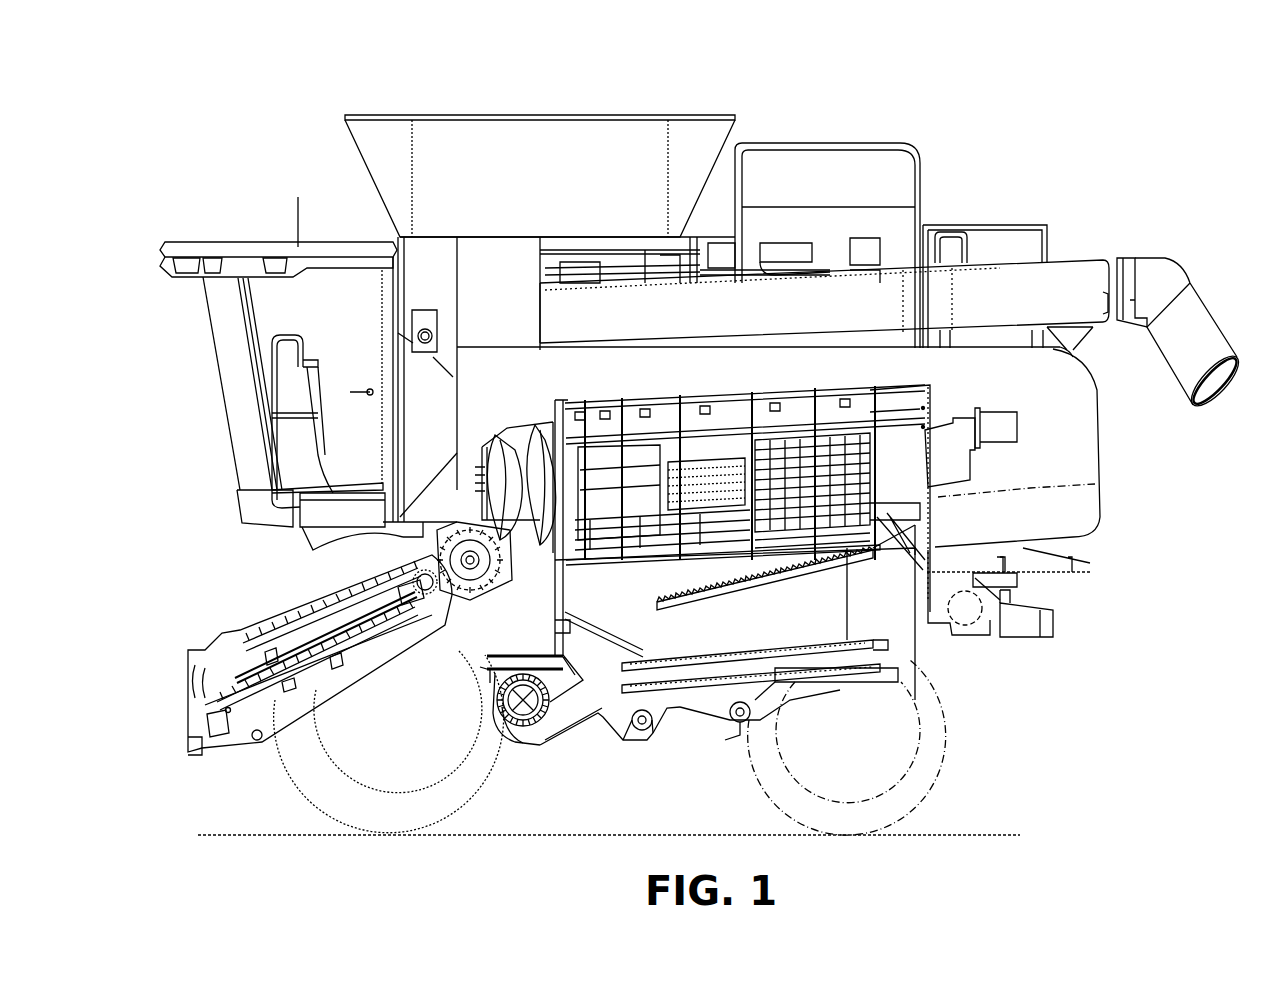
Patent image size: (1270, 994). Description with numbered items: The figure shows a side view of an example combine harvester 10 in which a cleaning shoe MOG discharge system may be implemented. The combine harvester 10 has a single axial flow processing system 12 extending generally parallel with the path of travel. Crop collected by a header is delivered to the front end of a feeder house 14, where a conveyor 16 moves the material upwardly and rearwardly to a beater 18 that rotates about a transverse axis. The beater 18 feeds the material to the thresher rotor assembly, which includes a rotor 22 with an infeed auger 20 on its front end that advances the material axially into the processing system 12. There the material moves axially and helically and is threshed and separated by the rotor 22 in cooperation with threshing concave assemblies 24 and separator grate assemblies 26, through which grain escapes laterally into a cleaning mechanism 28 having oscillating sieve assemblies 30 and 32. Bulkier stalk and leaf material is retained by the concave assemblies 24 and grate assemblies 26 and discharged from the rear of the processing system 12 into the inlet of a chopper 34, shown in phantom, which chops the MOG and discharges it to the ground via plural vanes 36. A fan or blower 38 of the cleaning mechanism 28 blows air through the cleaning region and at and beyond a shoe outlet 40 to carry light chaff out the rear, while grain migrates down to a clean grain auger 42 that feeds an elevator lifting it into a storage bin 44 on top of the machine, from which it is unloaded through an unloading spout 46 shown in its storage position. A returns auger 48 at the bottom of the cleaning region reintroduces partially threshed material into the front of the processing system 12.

The combine harvester 10 is at (838, 80).
The axial flow processing system 12 is at (642, 380).
The feeder house 14 is at (208, 630).
The conveyor 16 is at (345, 655).
The beater 18 is at (462, 585).
The infeed auger 20 is at (513, 452).
The rotor 22 is at (538, 418).
The threshing concave assemblies 24 is at (598, 478).
The separator grate assemblies 26 is at (771, 440).
The cleaning mechanism 28 is at (650, 620).
The oscillating sieve assembly 30 is at (720, 655).
The oscillating sieve assembly 32 is at (780, 665).
The chopper 34 is at (966, 620).
The vanes 36 is at (1045, 632).
The fan or blower 38 is at (522, 720).
The shoe outlet 40 is at (880, 610).
The clean grain auger 42 is at (641, 728).
The storage bin 44 is at (488, 140).
The unloading spout 46 is at (1065, 270).
The returns auger 48 is at (735, 722).